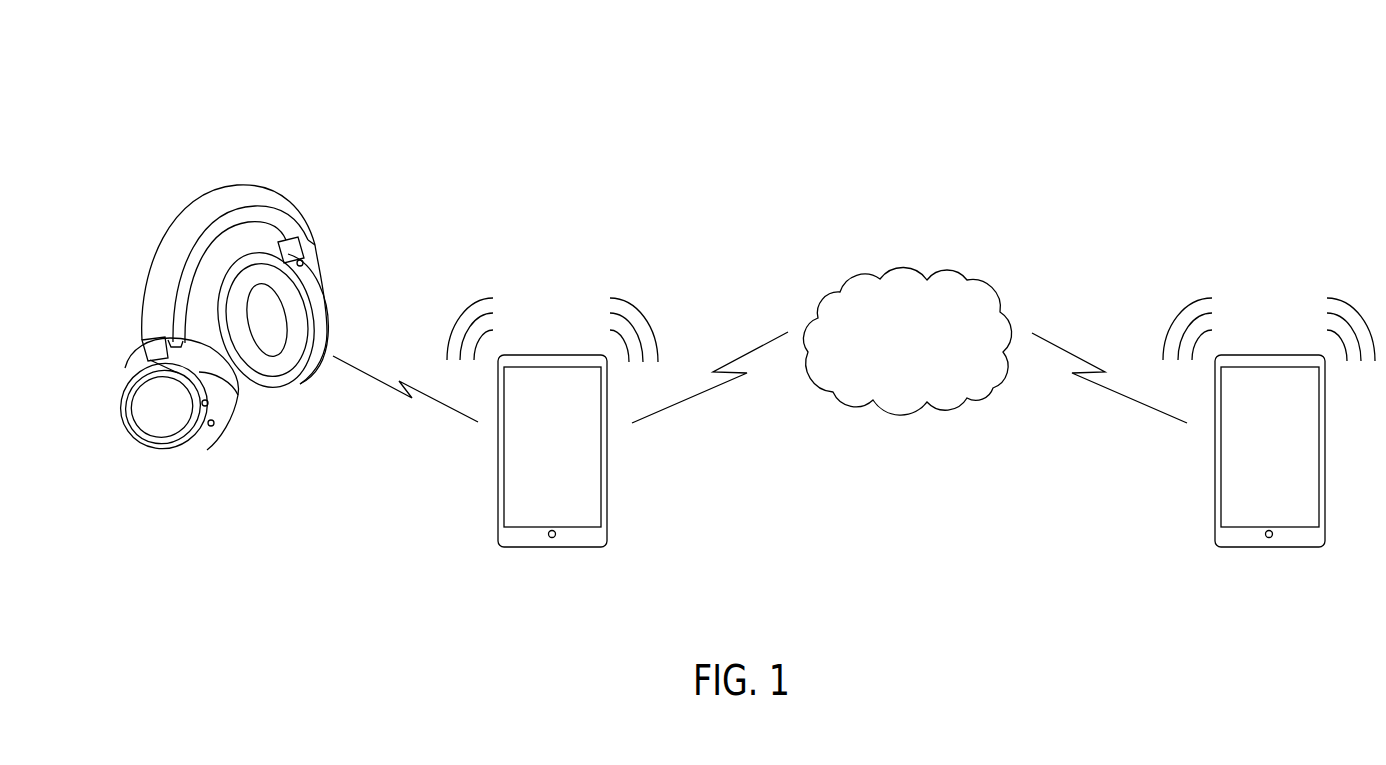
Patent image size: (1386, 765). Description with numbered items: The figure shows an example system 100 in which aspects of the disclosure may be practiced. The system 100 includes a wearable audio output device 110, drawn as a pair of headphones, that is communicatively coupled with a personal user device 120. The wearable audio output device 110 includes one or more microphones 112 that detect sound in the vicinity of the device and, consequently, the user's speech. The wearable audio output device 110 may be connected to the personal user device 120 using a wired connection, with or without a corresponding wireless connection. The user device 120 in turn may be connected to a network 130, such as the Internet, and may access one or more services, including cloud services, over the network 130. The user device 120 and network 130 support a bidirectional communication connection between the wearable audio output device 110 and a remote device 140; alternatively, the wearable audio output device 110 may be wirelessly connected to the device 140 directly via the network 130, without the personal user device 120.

The system 100 is at (1258, 103).
The wearable audio output device 110 is at (208, 215).
The microphones 112 is at (208, 402).
The personal user device 120 is at (571, 458).
The network 130 is at (923, 372).
The device 140 is at (1288, 458).